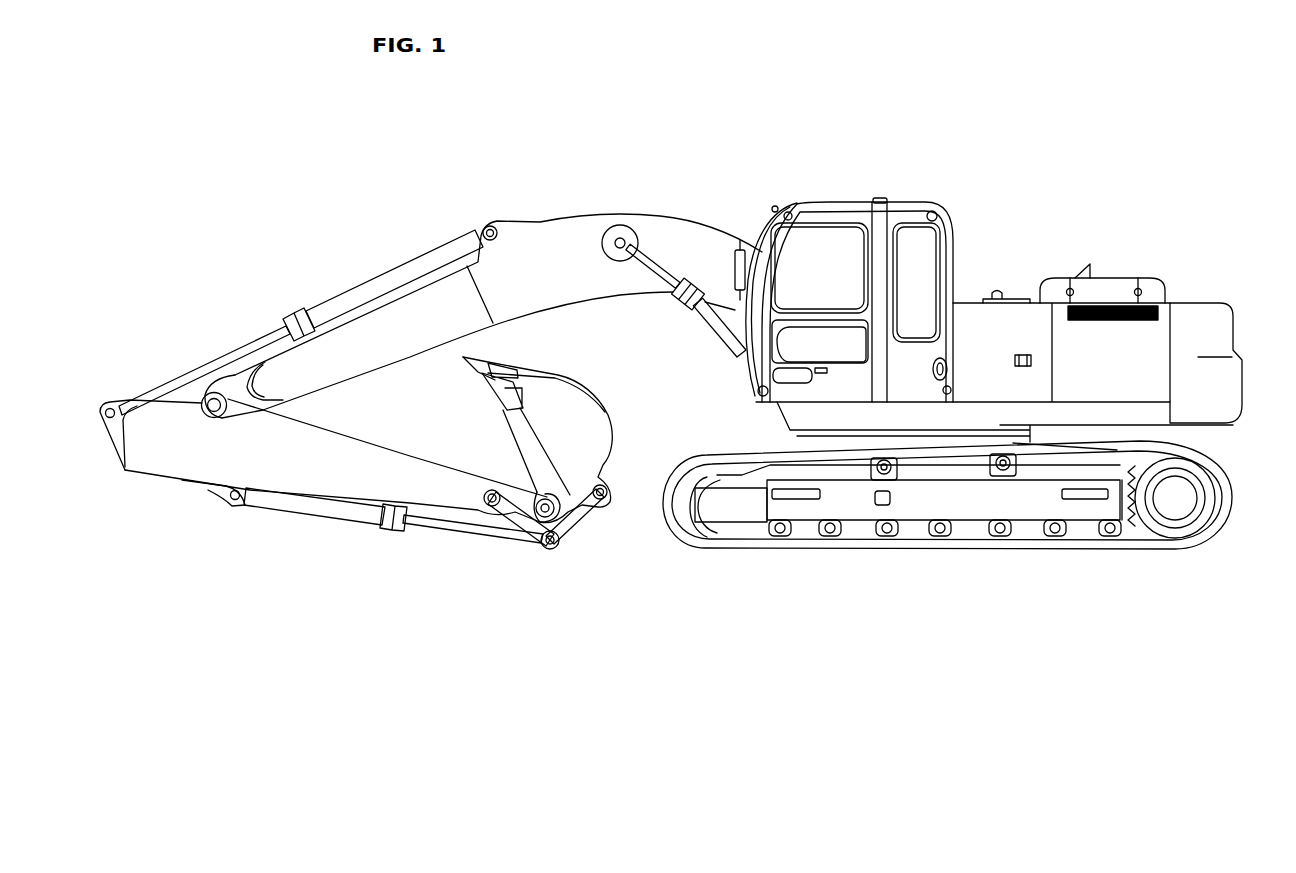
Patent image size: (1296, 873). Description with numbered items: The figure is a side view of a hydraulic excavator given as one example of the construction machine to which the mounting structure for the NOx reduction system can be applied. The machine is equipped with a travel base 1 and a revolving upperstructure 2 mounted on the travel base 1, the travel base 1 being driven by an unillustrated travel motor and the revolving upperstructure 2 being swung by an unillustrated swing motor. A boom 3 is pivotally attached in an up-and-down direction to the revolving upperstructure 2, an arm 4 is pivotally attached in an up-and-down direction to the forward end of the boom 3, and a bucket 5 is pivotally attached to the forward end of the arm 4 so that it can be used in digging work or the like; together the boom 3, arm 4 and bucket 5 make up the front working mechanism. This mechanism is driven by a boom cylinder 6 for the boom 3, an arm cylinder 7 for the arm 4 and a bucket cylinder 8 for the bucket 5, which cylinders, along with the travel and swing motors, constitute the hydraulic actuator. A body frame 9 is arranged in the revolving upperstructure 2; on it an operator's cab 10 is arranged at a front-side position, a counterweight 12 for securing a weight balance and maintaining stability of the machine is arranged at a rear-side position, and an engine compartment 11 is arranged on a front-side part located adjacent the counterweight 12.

The travel base 1 is at (905, 550).
The revolving upperstructure 2 is at (980, 296).
The boom 3 is at (664, 207).
The arm 4 is at (225, 462).
The bucket 5 is at (595, 418).
The boom cylinder 6 is at (715, 297).
The arm cylinder 7 is at (363, 280).
The bucket cylinder 8 is at (311, 516).
The body frame 9 is at (1122, 415).
The operator's cab 10 is at (837, 202).
The engine compartment 11 is at (1123, 278).
The counterweight 12 is at (1215, 303).